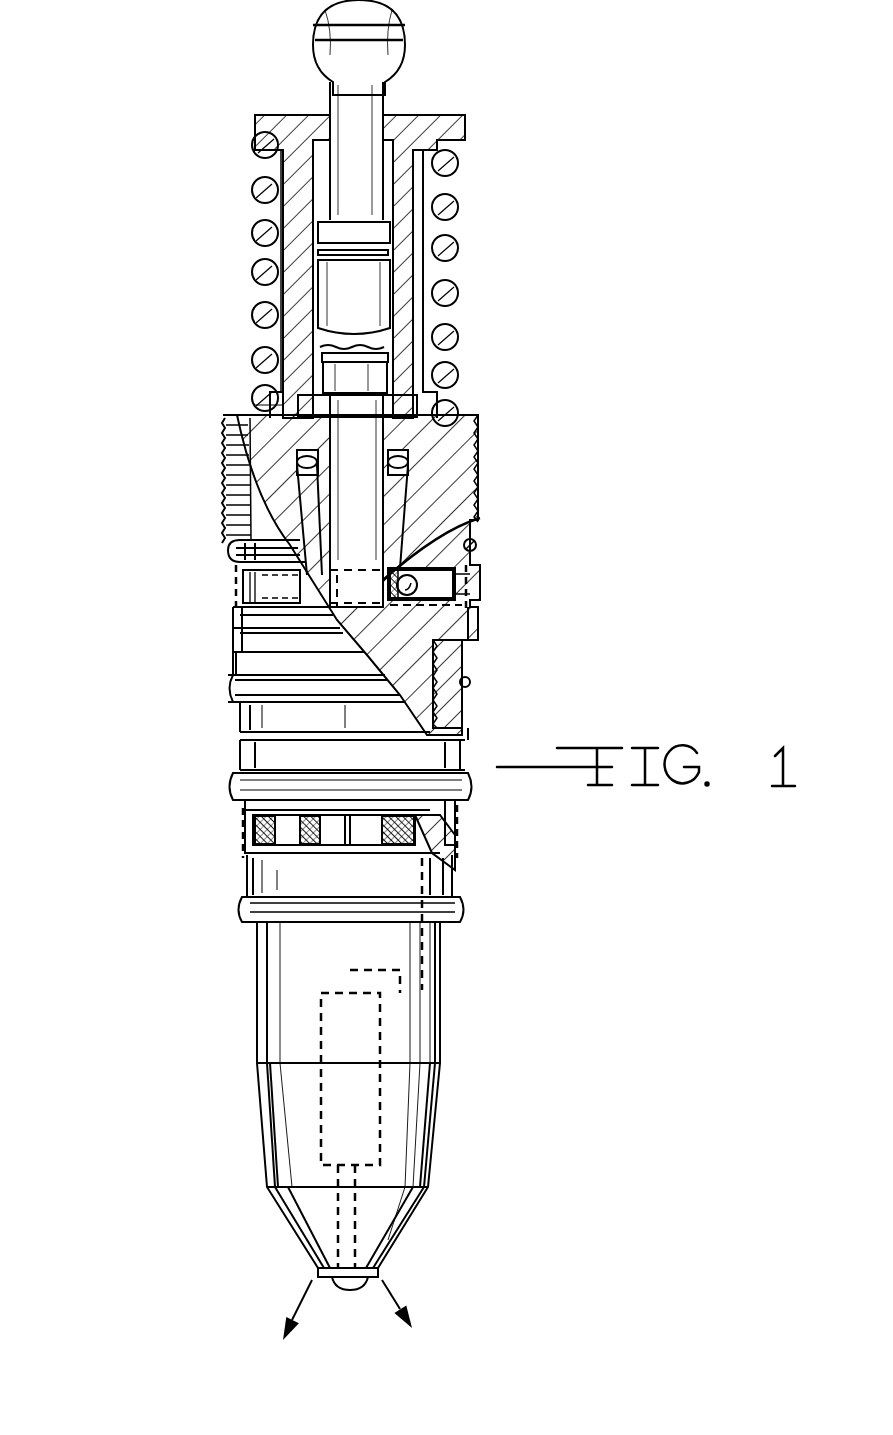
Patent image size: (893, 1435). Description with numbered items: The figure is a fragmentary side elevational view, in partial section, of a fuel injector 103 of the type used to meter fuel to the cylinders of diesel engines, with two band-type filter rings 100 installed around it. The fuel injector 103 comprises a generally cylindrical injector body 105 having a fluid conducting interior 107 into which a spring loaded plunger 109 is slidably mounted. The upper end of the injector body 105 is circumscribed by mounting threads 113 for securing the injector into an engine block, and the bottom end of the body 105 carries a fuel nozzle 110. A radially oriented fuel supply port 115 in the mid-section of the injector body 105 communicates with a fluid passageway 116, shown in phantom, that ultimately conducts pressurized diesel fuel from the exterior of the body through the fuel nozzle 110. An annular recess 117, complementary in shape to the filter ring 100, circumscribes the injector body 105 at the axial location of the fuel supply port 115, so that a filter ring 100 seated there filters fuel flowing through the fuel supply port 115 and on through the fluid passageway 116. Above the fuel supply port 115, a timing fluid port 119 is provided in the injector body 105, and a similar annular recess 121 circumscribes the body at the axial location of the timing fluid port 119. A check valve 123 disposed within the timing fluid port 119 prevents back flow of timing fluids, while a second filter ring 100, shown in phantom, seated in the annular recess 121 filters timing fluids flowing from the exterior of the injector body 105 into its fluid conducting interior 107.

The filter ring 100 is at (552, 588).
The fuel injector 103 is at (510, 386).
The injector body 105 is at (372, 718).
The fluid conducting interior 107 is at (372, 632).
The spring loaded plunger 109 is at (362, 103).
The fuel nozzle 110 is at (352, 1263).
The mounting threads 113 is at (230, 473).
The fuel supply port 115 is at (460, 822).
The fluid passageway 116 is at (425, 995).
The annular recess 117 is at (465, 847).
The timing fluid port 119 is at (463, 590).
The annular recess 121 is at (237, 603).
The check valve 123 is at (470, 545).